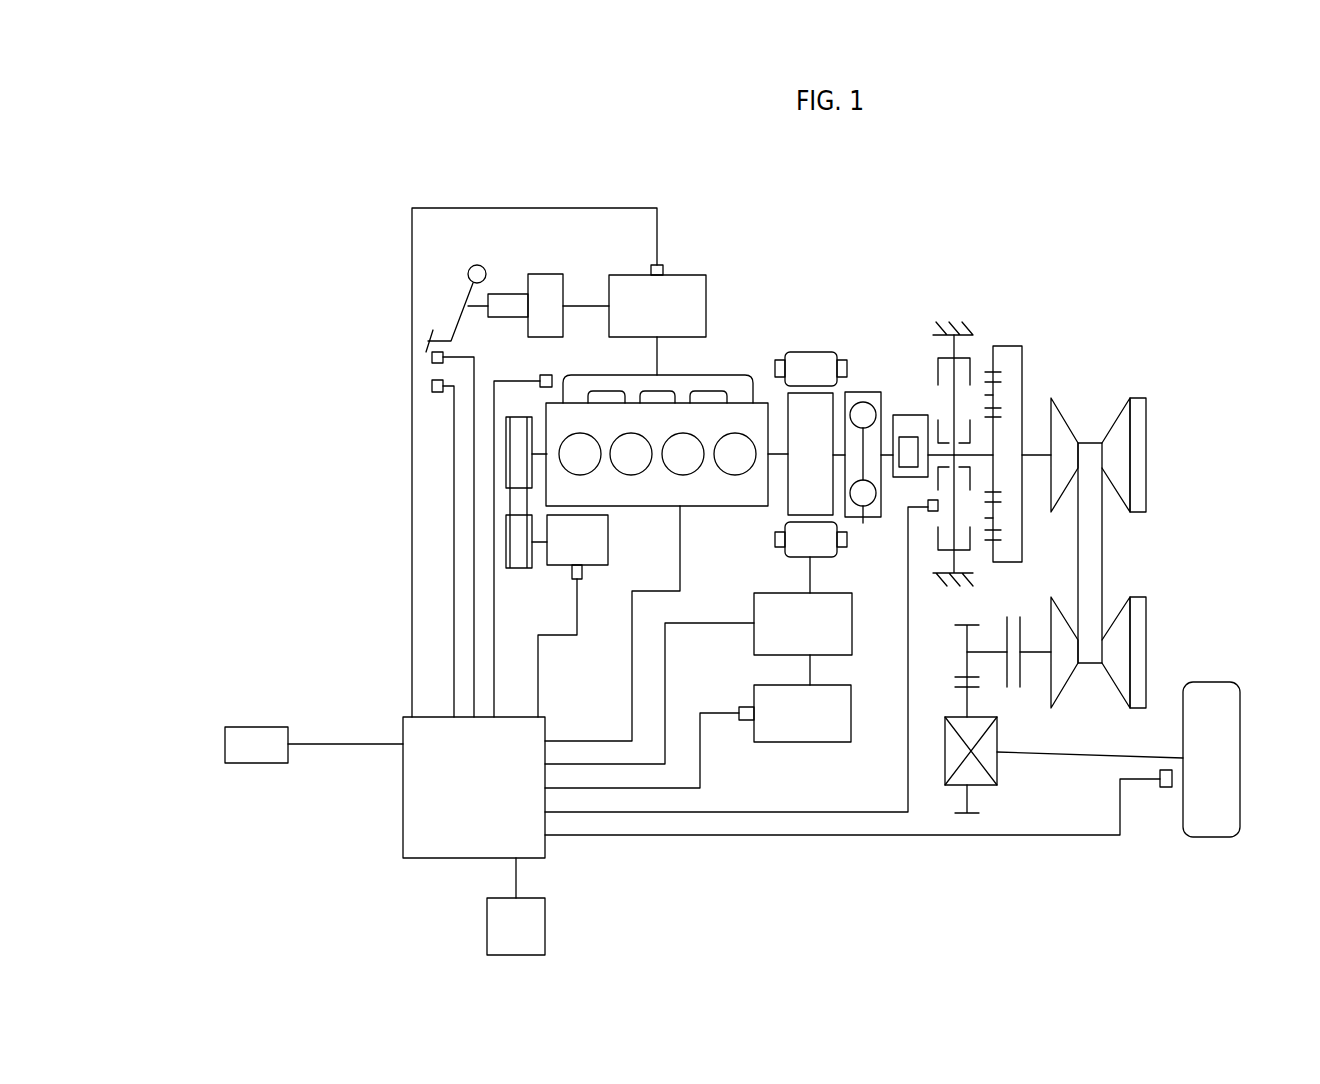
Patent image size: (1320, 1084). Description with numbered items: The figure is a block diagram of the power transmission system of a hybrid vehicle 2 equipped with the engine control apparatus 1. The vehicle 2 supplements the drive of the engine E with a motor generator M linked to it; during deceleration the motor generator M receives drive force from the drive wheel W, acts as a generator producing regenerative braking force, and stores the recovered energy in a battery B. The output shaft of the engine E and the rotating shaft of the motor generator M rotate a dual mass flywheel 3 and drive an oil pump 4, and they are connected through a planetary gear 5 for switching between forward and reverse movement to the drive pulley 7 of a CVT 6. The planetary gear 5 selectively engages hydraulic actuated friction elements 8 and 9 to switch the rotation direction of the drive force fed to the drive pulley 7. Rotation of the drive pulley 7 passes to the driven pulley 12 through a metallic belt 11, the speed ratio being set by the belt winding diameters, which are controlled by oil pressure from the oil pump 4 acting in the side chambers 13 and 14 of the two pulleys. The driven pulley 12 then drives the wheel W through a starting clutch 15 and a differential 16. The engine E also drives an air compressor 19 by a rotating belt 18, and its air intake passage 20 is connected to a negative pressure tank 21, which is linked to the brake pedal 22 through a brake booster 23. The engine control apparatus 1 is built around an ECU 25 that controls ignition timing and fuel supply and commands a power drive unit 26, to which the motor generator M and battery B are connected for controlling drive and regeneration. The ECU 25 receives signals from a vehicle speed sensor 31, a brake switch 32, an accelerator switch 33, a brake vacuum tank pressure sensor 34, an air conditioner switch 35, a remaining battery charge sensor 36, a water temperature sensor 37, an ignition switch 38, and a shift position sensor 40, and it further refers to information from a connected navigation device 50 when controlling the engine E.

The engine control apparatus 1 is at (378, 670).
The vehicle 2 is at (826, 258).
The dual mass flywheel 3 is at (852, 392).
The oil pump 4 is at (913, 415).
The planetary gear 5 is at (1013, 346).
The CVT 6 is at (1125, 388).
The drive pulley 7 is at (1122, 480).
The hydraulic actuated friction element 8 is at (968, 357).
The hydraulic actuated friction element 9 is at (979, 559).
The metallic belt 11 is at (1095, 540).
The driven pulley 12 is at (1118, 675).
The side chamber 13 is at (1140, 405).
The side chamber 14 is at (1140, 617).
The starting clutch 15 is at (1020, 692).
The differential 16 is at (997, 775).
The rotating belt 18 is at (517, 560).
The air compressor 19 is at (610, 557).
The air intake passage 20 is at (733, 375).
The negative pressure tank 21 is at (690, 275).
The brake pedal 22 is at (460, 320).
The brake booster 23 is at (545, 274).
The ECU 25 is at (403, 843).
The power drive unit 26 is at (757, 603).
The vehicle speed sensor 31 is at (1163, 793).
The brake switch 32 is at (432, 357).
The accelerator switch 33 is at (432, 386).
The brake vacuum tank pressure sensor 34 is at (660, 265).
The air conditioner switch 35 is at (580, 580).
The remaining battery charge sensor 36 is at (739, 707).
The water temperature sensor 37 is at (540, 375).
The ignition switch 38 is at (265, 727).
The shift position sensor 40 is at (931, 515).
The navigation device 50 is at (545, 918).
The battery B is at (803, 742).
The engine E is at (762, 353).
The motor generator M is at (835, 392).
The drive wheel W is at (1210, 840).